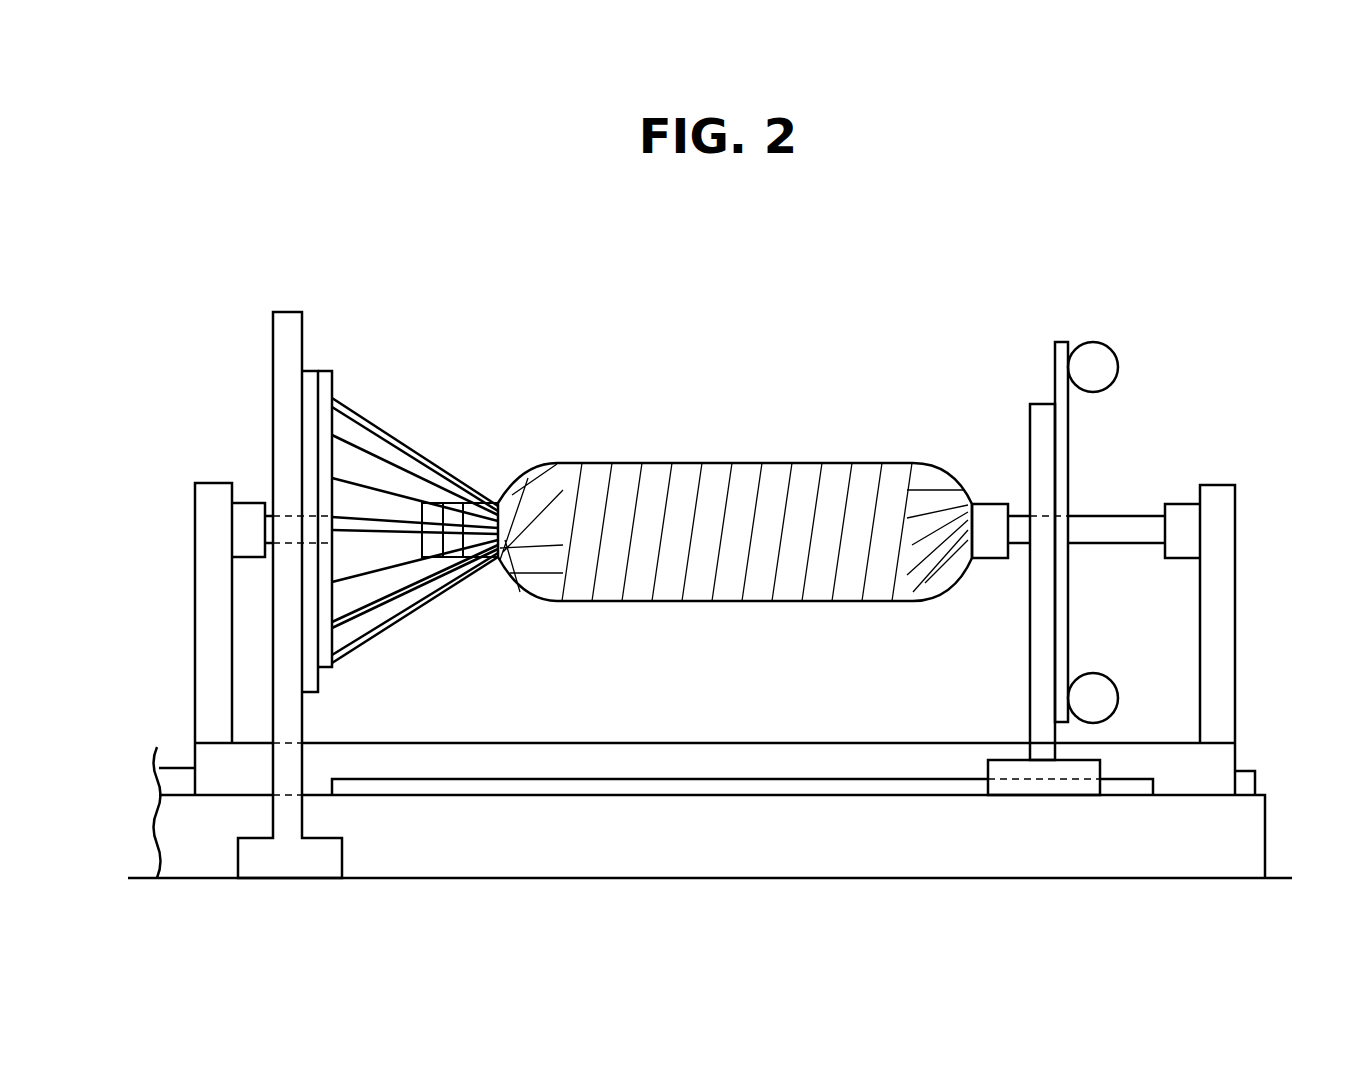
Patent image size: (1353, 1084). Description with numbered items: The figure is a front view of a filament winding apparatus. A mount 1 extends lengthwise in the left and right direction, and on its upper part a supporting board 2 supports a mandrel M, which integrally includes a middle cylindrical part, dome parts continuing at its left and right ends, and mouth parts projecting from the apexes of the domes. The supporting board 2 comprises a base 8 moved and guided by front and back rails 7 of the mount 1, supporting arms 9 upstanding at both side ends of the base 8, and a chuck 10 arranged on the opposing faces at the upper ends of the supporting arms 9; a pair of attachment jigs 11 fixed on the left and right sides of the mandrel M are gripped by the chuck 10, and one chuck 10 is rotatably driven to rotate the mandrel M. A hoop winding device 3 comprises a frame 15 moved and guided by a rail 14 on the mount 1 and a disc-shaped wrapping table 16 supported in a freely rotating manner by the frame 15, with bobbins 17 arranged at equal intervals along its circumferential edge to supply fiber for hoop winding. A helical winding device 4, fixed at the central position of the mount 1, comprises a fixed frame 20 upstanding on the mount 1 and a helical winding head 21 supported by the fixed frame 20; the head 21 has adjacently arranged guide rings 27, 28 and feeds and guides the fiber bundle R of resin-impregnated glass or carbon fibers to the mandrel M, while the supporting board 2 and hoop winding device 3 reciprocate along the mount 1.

The mount 1 is at (1165, 850).
The supporting board 2 is at (1262, 512).
The hoop winding device 3 is at (1058, 519).
The helical winding device 4 is at (317, 542).
The rails 7 is at (176, 760).
The base 8 is at (712, 740).
The supporting arms 9 is at (205, 567).
The chuck 10 is at (248, 503).
The attachment jigs 11 is at (350, 517).
The rail 14 is at (828, 772).
The frame 15 is at (1040, 623).
The wrapping table 16 is at (1065, 643).
The bobbins 17 is at (1103, 362).
The fixed frame 20 is at (290, 710).
The helical winding head 21 is at (367, 449).
The guide ring 27 is at (311, 367).
The guide ring 28 is at (334, 378).
The mandrel M is at (742, 462).
The fiber bundle R is at (360, 577).